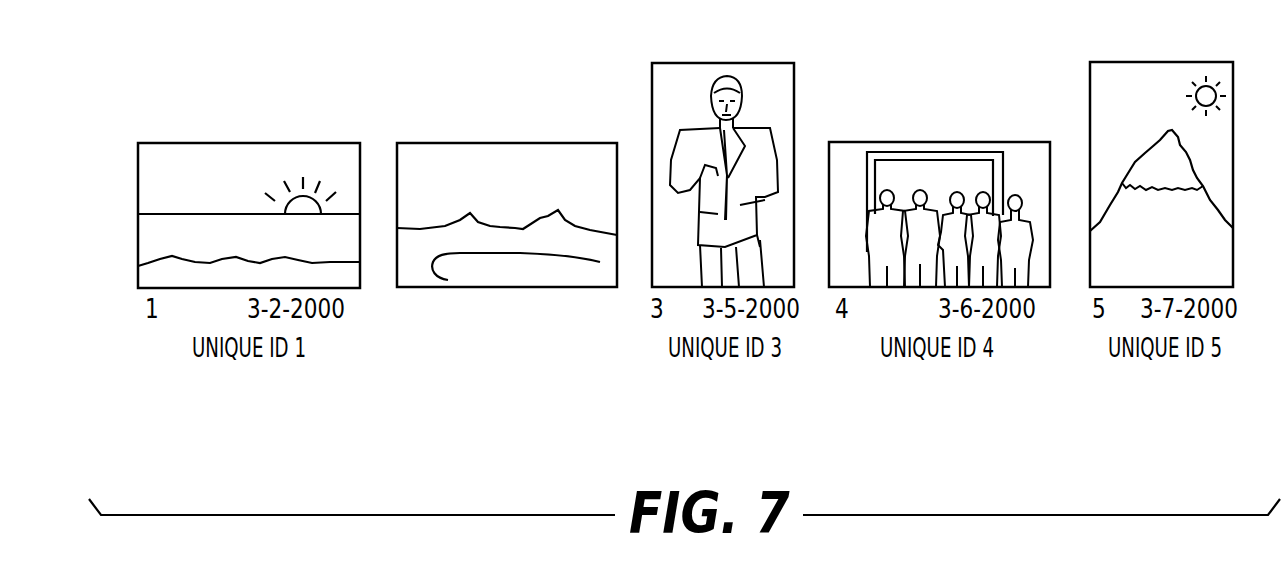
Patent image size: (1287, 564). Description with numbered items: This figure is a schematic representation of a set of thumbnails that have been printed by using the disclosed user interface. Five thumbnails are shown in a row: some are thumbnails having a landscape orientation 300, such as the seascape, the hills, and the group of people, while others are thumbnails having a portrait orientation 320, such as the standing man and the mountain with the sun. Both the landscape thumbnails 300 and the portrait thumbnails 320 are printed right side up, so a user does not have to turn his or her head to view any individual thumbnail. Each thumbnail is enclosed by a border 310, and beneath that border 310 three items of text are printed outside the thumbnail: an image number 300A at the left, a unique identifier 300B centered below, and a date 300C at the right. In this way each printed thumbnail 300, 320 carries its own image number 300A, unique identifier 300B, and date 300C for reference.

The thumbnail having a landscape orientation 300 is at (240, 155).
The border 310 is at (428, 143).
The thumbnail having a portrait orientation 320 is at (676, 72).
The image number 300A is at (409, 331).
The unique identifier 300B is at (502, 367).
The date 300C is at (585, 327).